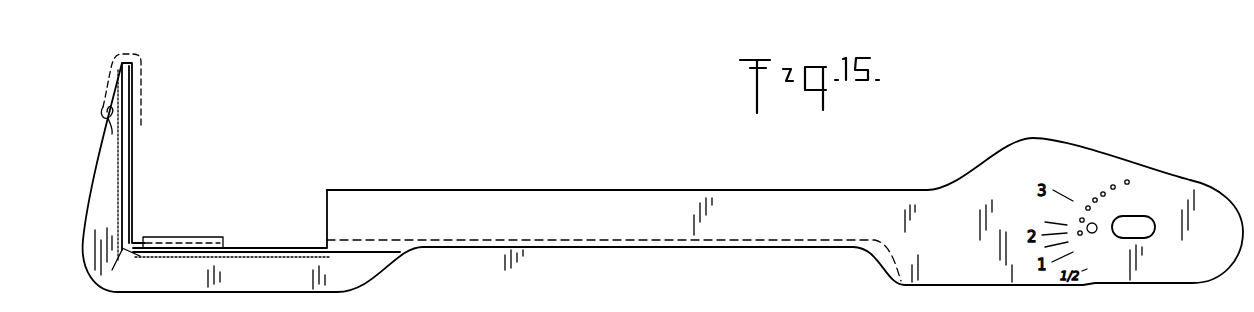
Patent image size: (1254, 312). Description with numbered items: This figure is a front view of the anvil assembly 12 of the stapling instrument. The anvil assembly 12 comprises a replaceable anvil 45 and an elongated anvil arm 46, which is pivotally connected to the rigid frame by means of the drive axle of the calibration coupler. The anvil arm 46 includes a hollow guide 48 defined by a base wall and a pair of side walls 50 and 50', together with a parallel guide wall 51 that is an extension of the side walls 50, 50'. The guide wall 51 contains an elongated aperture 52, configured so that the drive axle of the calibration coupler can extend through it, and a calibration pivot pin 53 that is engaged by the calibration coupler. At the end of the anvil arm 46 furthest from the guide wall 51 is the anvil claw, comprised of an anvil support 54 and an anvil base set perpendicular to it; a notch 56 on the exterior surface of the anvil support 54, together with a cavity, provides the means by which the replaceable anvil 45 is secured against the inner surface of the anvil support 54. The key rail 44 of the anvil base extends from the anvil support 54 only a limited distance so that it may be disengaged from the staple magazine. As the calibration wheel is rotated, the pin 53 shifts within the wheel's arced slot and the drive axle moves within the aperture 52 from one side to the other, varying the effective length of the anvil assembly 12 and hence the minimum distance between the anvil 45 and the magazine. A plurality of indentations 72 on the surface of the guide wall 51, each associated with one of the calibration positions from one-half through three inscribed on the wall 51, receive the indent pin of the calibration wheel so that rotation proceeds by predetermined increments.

The anvil assembly 12 is at (644, 277).
The key rail 44 is at (184, 237).
The replaceable anvil 45 is at (143, 82).
The anvil arm 46 is at (703, 190).
The hollow guide 48 is at (458, 190).
The side wall 50 is at (230, 219).
The side wall 50' is at (332, 179).
The guide wall 51 is at (1045, 140).
The elongated aperture 52 is at (1141, 216).
The calibration pivot pin 53 is at (1094, 233).
The anvil support 54 is at (97, 186).
The notch 56 is at (108, 124).
The indentations 72 is at (1129, 180).